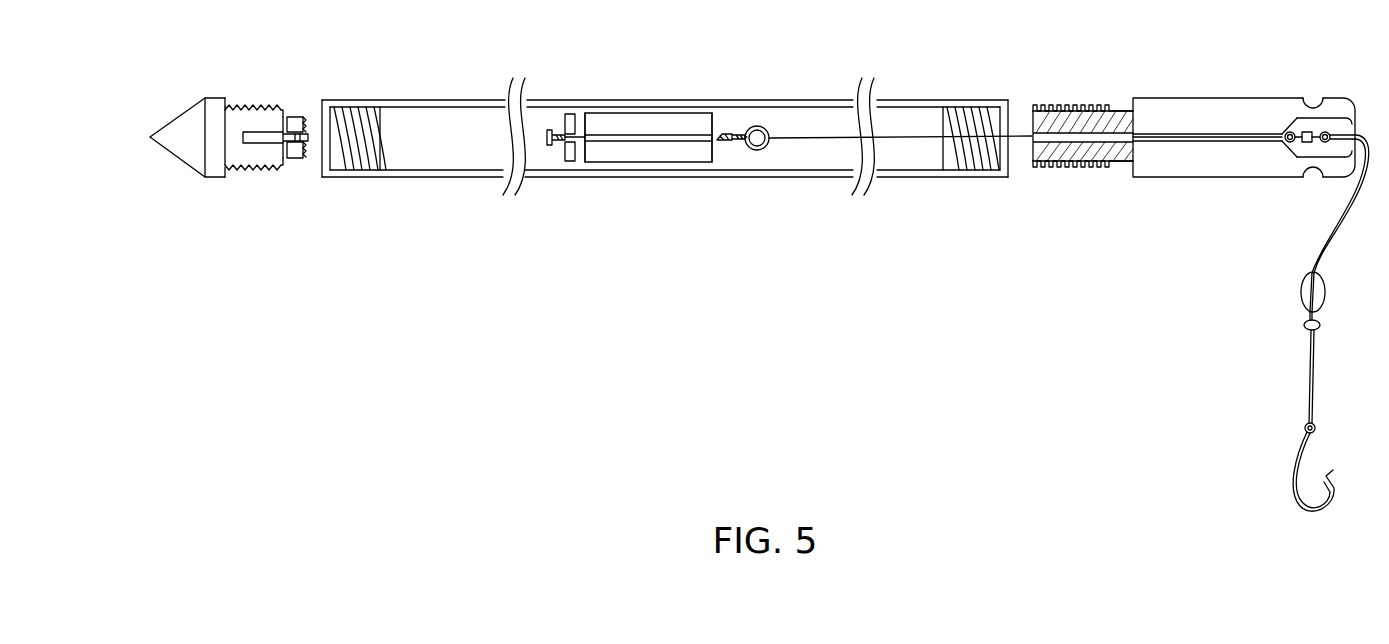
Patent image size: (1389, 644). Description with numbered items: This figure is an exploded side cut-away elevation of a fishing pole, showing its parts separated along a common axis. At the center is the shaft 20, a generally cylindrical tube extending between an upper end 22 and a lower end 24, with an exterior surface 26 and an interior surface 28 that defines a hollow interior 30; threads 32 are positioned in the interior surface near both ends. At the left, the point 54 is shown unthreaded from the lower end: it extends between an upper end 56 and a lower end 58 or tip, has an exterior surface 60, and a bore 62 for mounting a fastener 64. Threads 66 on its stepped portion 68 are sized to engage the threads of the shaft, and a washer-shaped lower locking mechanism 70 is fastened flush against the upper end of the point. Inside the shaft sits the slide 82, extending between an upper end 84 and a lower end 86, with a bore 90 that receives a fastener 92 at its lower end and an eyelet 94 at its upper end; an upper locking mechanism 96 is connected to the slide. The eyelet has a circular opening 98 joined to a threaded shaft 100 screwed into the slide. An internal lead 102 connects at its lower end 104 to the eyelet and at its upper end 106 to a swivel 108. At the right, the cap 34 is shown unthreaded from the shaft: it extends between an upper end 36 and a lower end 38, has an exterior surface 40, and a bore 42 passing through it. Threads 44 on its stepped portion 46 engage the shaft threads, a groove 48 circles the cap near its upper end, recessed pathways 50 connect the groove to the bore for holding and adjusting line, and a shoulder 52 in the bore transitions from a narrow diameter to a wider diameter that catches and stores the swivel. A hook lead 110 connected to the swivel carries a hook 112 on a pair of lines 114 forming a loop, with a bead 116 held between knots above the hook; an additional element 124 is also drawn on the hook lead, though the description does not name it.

The shaft 20 is at (820, 60).
The upper end 22 is at (1008, 106).
The lower end 24 is at (324, 100).
The exterior surface 26 is at (450, 100).
The interior surface 28 is at (460, 107).
The hollow interior 30 is at (421, 138).
The threads 32 is at (370, 116).
The cap 34 is at (1203, 44).
The upper end 36 is at (1357, 112).
The lower end 38 is at (1034, 163).
The exterior surface 40 is at (1226, 98).
The bore 42 is at (1180, 134).
The threads 44 is at (1056, 105).
The stepped portion 46 is at (1035, 58).
The groove 48 is at (1312, 106).
The recessed pathways 50 is at (1340, 102).
The shoulder 52 is at (1287, 130).
The point 54 is at (183, 70).
The upper end 56 is at (292, 116).
The lower end 58 is at (165, 132).
The exterior surface 60 is at (218, 102).
The bore 62 is at (265, 130).
The fastener 64 is at (305, 118).
The threads 66 is at (251, 172).
The stepped portion 68 is at (288, 218).
The lower locking mechanism 70 is at (294, 160).
The slide 82 is at (668, 108).
The upper end 84 is at (713, 120).
The lower end 86 is at (578, 118).
The bore 90 is at (645, 135).
The fastener 92 is at (550, 128).
The eyelet 94 is at (757, 125).
The upper locking mechanism 96 is at (570, 162).
The circular opening 98 is at (742, 148).
The threaded shaft 100 is at (722, 143).
The internal lead 102 is at (838, 134).
The lower end 104 is at (760, 148).
The upper end 106 is at (1282, 142).
The swivel 108 is at (1309, 130).
The hook lead 110 is at (1232, 332).
The hook 112 is at (1292, 468).
The lines 114 is at (1305, 378).
The bead 116 is at (1303, 322).
The float 124 is at (1302, 290).